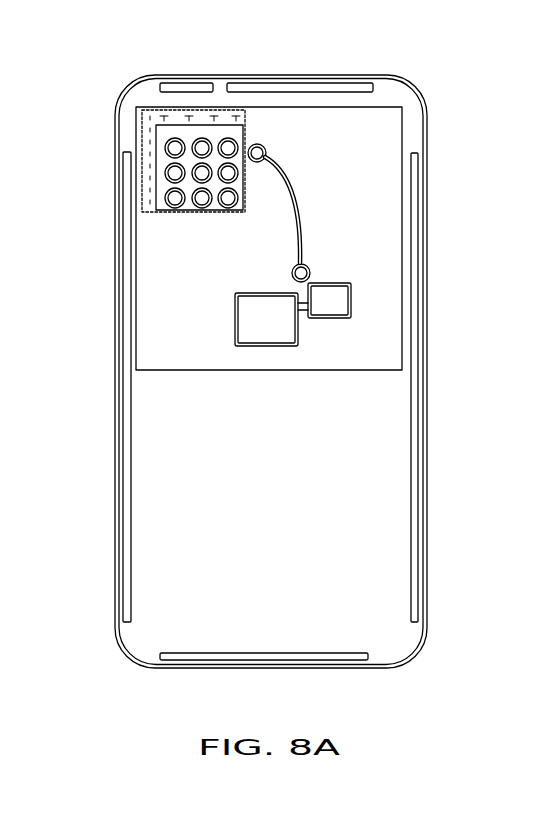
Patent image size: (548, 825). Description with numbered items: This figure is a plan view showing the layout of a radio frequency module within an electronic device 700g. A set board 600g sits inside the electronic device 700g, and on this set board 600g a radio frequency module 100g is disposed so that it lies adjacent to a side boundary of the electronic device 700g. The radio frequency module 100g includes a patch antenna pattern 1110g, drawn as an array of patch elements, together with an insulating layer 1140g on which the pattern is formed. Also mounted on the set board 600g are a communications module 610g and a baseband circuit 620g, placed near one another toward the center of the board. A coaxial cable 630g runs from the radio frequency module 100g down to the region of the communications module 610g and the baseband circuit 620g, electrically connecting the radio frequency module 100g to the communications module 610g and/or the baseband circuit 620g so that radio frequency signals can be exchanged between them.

The electronic device 700g is at (332, 73).
The set board 600g is at (385, 186).
The radio frequency module 100g is at (193, 107).
The insulating layer 1140g is at (242, 130).
The patch antenna pattern 1110g is at (177, 170).
The coaxial cable 630g is at (303, 229).
The communications module 610g is at (243, 322).
The baseband circuit 620g is at (351, 302).